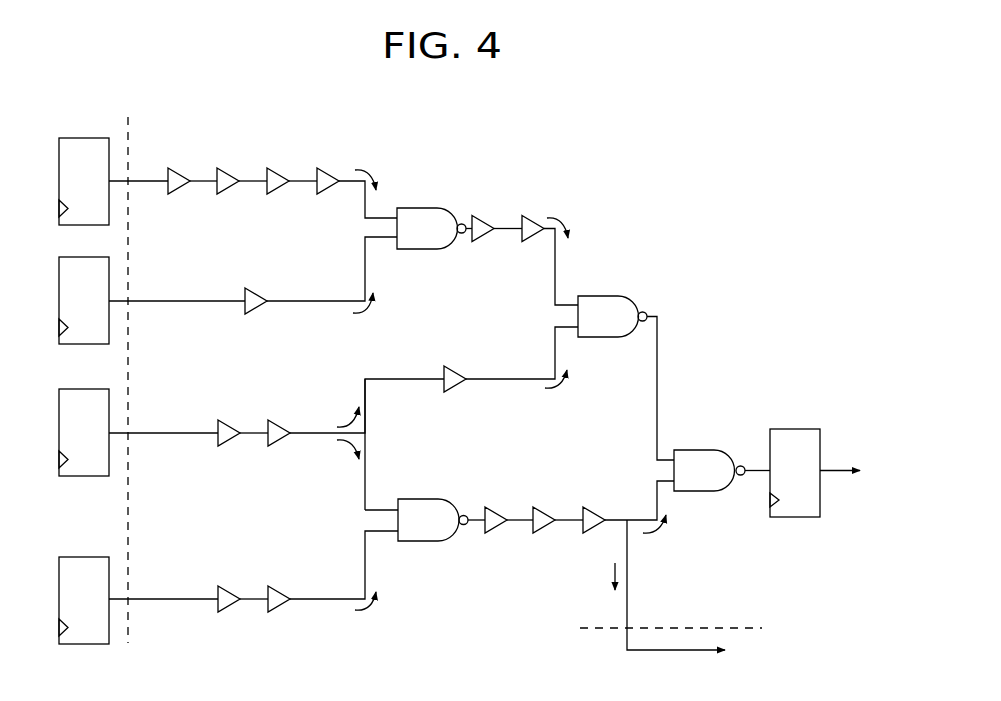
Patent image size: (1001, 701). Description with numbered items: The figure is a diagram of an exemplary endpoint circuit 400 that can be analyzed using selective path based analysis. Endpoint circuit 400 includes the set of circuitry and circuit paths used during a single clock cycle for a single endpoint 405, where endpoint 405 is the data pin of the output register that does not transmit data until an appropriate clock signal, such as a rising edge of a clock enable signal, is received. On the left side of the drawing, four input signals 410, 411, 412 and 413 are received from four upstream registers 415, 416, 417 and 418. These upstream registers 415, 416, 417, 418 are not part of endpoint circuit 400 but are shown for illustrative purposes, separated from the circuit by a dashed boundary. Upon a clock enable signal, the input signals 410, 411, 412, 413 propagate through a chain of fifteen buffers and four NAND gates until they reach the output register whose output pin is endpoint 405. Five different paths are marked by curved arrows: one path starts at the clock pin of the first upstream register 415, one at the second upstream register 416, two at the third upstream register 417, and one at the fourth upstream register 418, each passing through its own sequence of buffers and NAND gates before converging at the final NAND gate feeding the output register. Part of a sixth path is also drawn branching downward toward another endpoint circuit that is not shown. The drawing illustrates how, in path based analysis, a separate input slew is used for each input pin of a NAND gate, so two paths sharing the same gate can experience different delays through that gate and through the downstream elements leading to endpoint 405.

The endpoint circuit 400 is at (606, 149).
The endpoint 405 is at (837, 475).
The input signal 410 is at (140, 183).
The input signal 411 is at (153, 302).
The input signal 412 is at (155, 435).
The input signal 413 is at (153, 601).
The upstream register 415 is at (88, 137).
The upstream register 416 is at (91, 257).
The upstream register 417 is at (88, 388).
The upstream register 418 is at (94, 557).